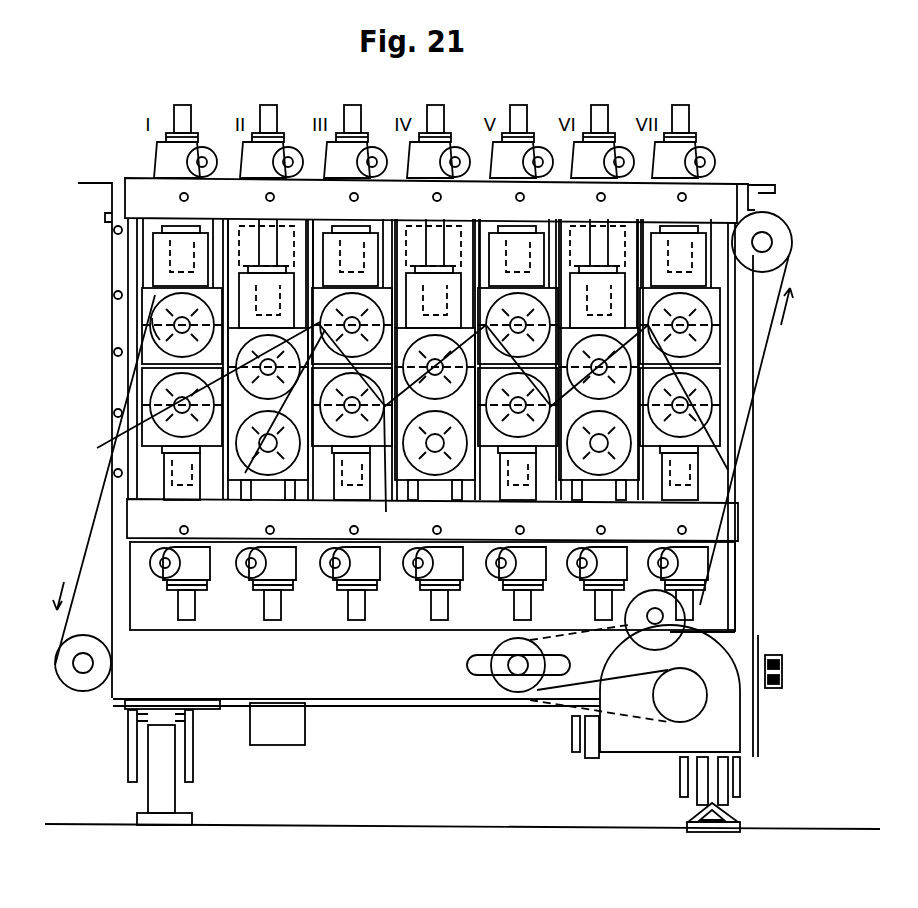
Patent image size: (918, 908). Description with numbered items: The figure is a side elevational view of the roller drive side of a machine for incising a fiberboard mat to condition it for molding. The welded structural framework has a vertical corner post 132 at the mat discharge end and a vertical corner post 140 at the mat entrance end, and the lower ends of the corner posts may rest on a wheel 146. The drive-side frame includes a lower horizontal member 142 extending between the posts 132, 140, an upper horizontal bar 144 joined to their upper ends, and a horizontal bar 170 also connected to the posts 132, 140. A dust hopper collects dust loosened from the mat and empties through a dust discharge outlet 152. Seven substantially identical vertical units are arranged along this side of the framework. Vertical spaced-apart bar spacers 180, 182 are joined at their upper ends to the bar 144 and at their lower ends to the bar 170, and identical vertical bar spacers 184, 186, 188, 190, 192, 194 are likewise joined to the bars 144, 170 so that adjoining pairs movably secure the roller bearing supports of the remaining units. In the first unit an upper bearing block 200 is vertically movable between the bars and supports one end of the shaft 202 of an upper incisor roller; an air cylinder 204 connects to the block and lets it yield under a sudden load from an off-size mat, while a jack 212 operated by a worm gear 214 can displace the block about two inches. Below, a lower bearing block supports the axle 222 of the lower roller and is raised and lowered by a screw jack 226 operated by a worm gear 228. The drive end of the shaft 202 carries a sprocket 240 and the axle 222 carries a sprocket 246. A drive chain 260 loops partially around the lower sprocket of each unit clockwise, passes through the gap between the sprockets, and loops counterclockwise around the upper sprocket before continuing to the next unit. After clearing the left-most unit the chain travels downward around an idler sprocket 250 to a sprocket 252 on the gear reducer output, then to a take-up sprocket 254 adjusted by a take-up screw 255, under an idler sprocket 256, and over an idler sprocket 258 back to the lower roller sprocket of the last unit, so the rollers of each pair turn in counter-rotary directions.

The vertical corner post 132 is at (742, 475).
The vertical corner post 140 is at (116, 390).
The lower horizontal member 142 is at (304, 685).
The upper horizontal bar 144 is at (322, 220).
The wheel 146 is at (163, 795).
The dust discharge outlet 152 is at (305, 733).
The horizontal bar 170 is at (429, 525).
The vertical bar spacer 180 is at (148, 266).
The vertical bar spacer 182 is at (223, 233).
The vertical bar spacer 184 is at (312, 233).
The vertical bar spacer 186 is at (395, 232).
The vertical bar spacer 188 is at (478, 232).
The vertical bar spacer 190 is at (560, 235).
The vertical bar spacer 192 is at (638, 235).
The vertical bar spacer 194 is at (718, 237).
The upper bearing block 200 is at (152, 302).
The shaft 202 is at (178, 321).
The air cylinder 204 is at (160, 250).
The jack 212 is at (170, 156).
The worm gear 214 is at (210, 150).
The axle 222 is at (167, 407).
The screw jack 226 is at (197, 568).
The worm gear 228 is at (153, 565).
The sprocket 240 is at (148, 350).
The sprocket 246 is at (178, 401).
The idler sprocket 250 is at (73, 680).
The sprocket 252 is at (667, 717).
The take-up sprocket 254 is at (495, 683).
The take-up screw 255 is at (767, 640).
The idler sprocket 256 is at (675, 613).
The idler sprocket 258 is at (775, 225).
The drive chain 260 is at (95, 510).